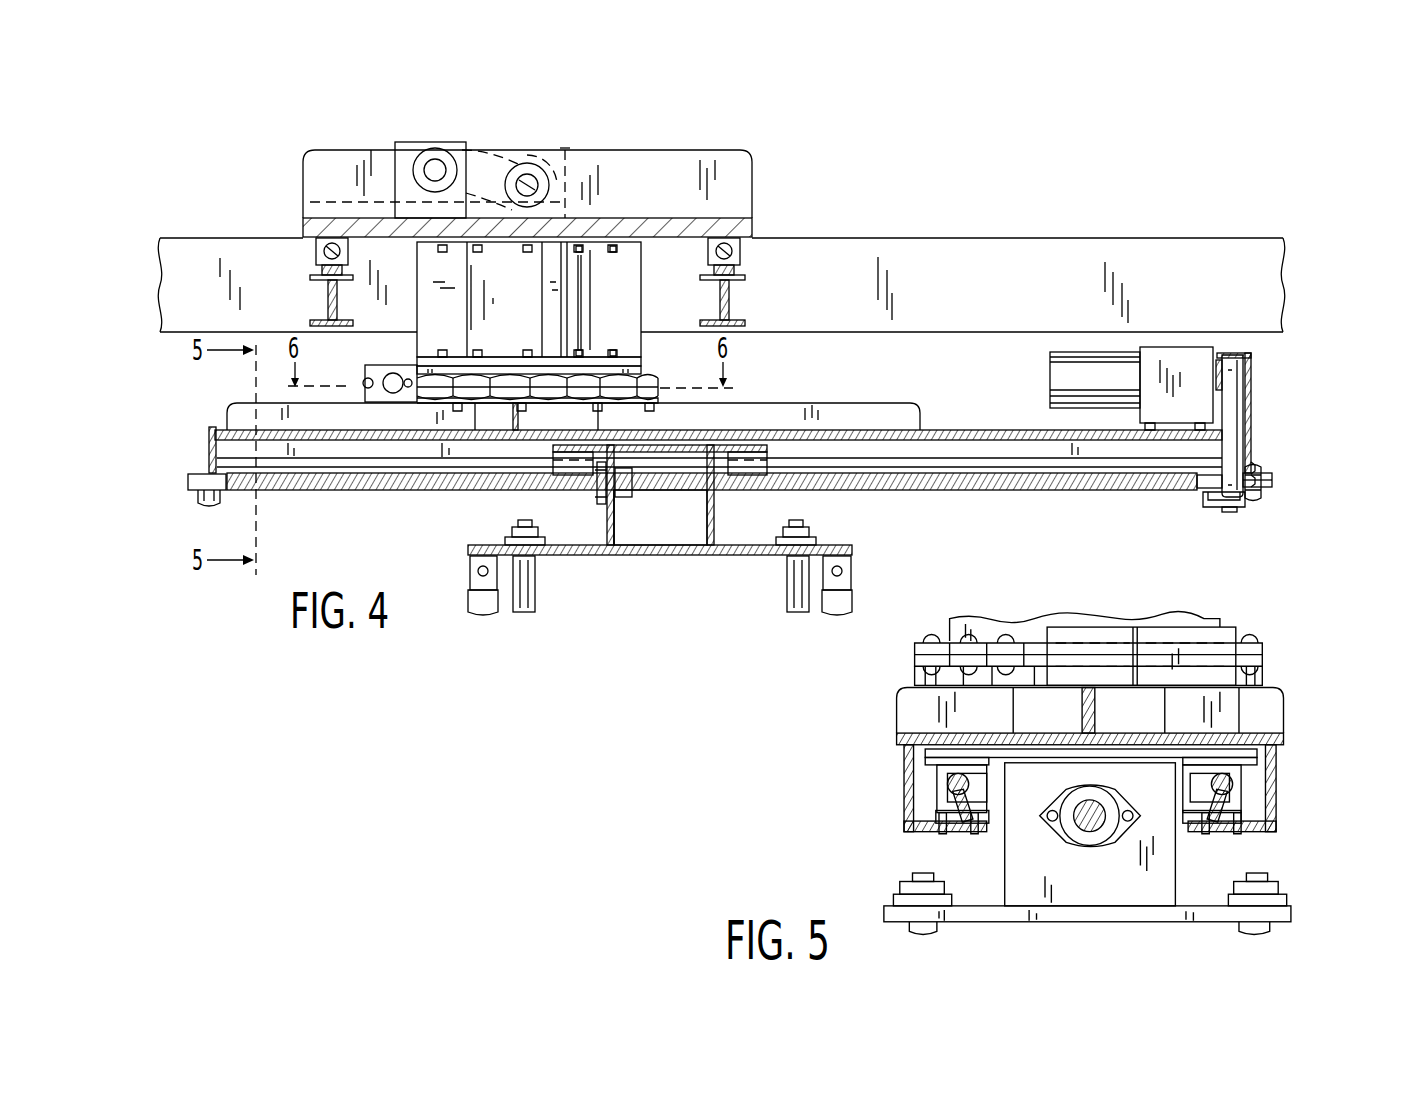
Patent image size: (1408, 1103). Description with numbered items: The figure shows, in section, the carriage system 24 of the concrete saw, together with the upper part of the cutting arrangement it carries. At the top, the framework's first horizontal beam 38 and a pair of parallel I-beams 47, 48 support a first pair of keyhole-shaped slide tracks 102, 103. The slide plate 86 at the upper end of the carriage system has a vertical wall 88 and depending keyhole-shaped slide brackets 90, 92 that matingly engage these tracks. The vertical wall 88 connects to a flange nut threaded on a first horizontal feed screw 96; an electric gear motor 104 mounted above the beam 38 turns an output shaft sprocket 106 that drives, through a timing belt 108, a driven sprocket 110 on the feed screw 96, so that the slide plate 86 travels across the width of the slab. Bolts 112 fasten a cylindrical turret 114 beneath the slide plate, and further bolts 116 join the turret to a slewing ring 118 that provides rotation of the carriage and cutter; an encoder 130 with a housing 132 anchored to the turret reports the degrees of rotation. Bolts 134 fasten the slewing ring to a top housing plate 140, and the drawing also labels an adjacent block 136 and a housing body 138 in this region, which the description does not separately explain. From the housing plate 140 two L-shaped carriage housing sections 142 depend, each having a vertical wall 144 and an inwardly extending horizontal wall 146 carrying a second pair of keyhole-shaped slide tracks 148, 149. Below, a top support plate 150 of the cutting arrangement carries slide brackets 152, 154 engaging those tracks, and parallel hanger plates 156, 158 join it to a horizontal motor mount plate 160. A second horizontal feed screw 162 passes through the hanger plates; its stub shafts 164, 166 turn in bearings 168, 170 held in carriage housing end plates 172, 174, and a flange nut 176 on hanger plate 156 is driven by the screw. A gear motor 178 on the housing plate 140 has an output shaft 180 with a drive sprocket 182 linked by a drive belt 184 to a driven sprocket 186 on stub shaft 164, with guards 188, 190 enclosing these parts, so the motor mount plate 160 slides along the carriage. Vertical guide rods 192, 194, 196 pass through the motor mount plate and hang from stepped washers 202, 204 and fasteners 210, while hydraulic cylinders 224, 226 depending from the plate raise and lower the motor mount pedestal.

In FIG. 4, the carriage system 24 is at (668, 112).
In FIG. 4, the first horizontal beam 38 is at (1022, 253).
In FIG. 4, the I-beam 47 is at (339, 300).
In FIG. 4, the I-beam 48 is at (730, 300).
In FIG. 4, the slide plate 86 is at (737, 227).
In FIG. 4, the vertical wall 88 is at (678, 160).
In FIG. 4, the slide bracket 90 is at (745, 253).
In FIG. 4, the slide bracket 92 is at (318, 250).
In FIG. 4, the first horizontal feed screw 96 is at (527, 178).
In FIG. 4, the slide track 102 is at (717, 253).
In FIG. 4, the slide track 103 is at (310, 271).
In FIG. 4, the electric gear motor 104 is at (408, 143).
In FIG. 4, the output shaft sprocket 106 is at (440, 138).
In FIG. 4, the timing belt 108 is at (480, 146).
In FIG. 4, the driven sprocket 110 is at (556, 150).
In FIG. 4, the bolts 112 is at (612, 255).
In FIG. 4, the turret 114 is at (528, 335).
In FIG. 4, the bolts 116 is at (613, 338).
In FIG. 4, the slewing ring 118 is at (640, 374).
In FIG. 5, the slewing ring 118 is at (1237, 652).
In FIG. 4, the encoder 130 is at (385, 381).
In FIG. 5, the housing 132 is at (1203, 630).
In FIG. 4, the bolts 134 is at (650, 410).
In FIG. 4, the block 136 is at (513, 410).
In FIG. 5, the block 136 is at (1067, 704).
In FIG. 4, the housing 138 is at (908, 417).
In FIG. 5, the housing 138 is at (1240, 707).
In FIG. 4, the top housing plate 140 is at (1018, 430).
In FIG. 5, the top housing plate 140 is at (1113, 725).
In FIG. 5, the L-shaped carriage housing section 142 is at (866, 762).
In FIG. 5, the vertical wall 144 is at (897, 775).
In FIG. 5, the horizontal wall 146 is at (912, 814).
In FIG. 5, the slide track 148 is at (1213, 780).
In FIG. 5, the slide track 149 is at (940, 782).
In FIG. 4, the top support plate 150 is at (660, 490).
In FIG. 5, the top support plate 150 is at (1047, 748).
In FIG. 4, the slide bracket 152 is at (753, 466).
In FIG. 5, the slide bracket 152 is at (1180, 765).
In FIG. 5, the slide bracket 154 is at (968, 790).
In FIG. 4, the hanger plate 156 is at (616, 522).
In FIG. 5, the hanger plate 156 is at (1138, 884).
In FIG. 4, the hanger plate 158 is at (714, 515).
In FIG. 4, the motor mount plate 160 is at (660, 556).
In FIG. 5, the motor mount plate 160 is at (1080, 903).
In FIG. 4, the second horizontal feed screw 162 is at (972, 483).
In FIG. 5, the second horizontal feed screw 162 is at (1067, 820).
In FIG. 4, the stub shaft 164 is at (1273, 480).
In FIG. 4, the stub shaft 166 is at (222, 497).
In FIG. 4, the bearing 168 is at (1258, 493).
In FIG. 4, the bearing 170 is at (200, 500).
In FIG. 4, the carriage housing end plate 172 is at (1252, 453).
In FIG. 4, the carriage housing end plate 174 is at (210, 450).
In FIG. 4, the flange nut 176 is at (600, 487).
In FIG. 4, the gear motor 178 is at (1150, 355).
In FIG. 4, the output shaft 180 is at (1228, 356).
In FIG. 4, the drive sprocket 182 is at (1253, 380).
In FIG. 4, the drive belt 184 is at (1236, 428).
In FIG. 4, the driven sprocket 186 is at (1207, 500).
In FIG. 4, the guard 188 is at (1252, 352).
In FIG. 4, the guard 190 is at (1227, 512).
In FIG. 4, the guide rod 192 is at (536, 598).
In FIG. 4, the guide rod 194 is at (789, 588).
In FIG. 5, the guide rod 194 is at (1243, 912).
In FIG. 5, the guide rod 196 is at (925, 913).
In FIG. 4, the stepped washer 202 is at (507, 536).
In FIG. 4, the stepped washer 204 is at (815, 533).
In FIG. 4, the fasteners 210 is at (522, 521).
In FIG. 5, the fasteners 210 is at (925, 845).
In FIG. 4, the hydraulic cylinder 224 is at (853, 598).
In FIG. 4, the hydraulic cylinder 226 is at (476, 606).